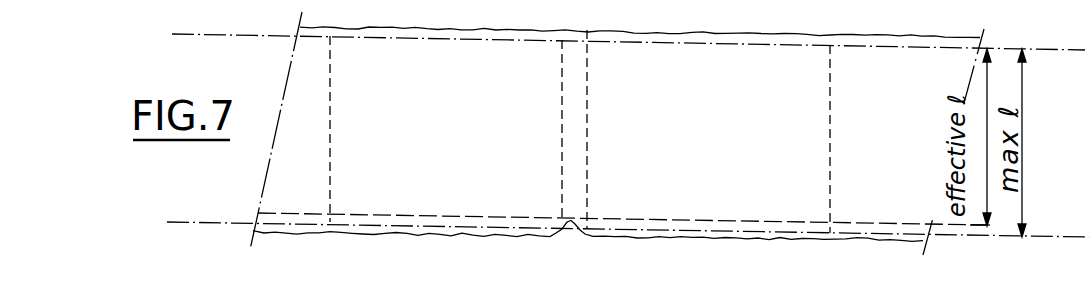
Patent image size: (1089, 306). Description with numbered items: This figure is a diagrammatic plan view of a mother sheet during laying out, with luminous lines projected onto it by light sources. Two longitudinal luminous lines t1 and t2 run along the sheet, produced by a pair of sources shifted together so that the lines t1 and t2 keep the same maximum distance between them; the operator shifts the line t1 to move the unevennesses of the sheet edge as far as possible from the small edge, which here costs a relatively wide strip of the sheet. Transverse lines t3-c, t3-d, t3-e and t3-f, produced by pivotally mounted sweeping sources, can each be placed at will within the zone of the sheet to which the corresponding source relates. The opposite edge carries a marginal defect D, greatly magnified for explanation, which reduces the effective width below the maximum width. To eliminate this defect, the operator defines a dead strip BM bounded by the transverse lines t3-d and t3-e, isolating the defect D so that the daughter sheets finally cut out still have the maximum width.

The longitudinal luminous line t1 is at (190, 222).
The longitudinal luminous line t2 is at (196, 34).
The transverse line t3-c is at (330, 113).
The transverse line t3-d is at (560, 124).
The transverse line t3-e is at (587, 128).
The transverse line t3-f is at (830, 132).
The dead strip BM is at (577, 57).
The marginal defect D is at (570, 222).